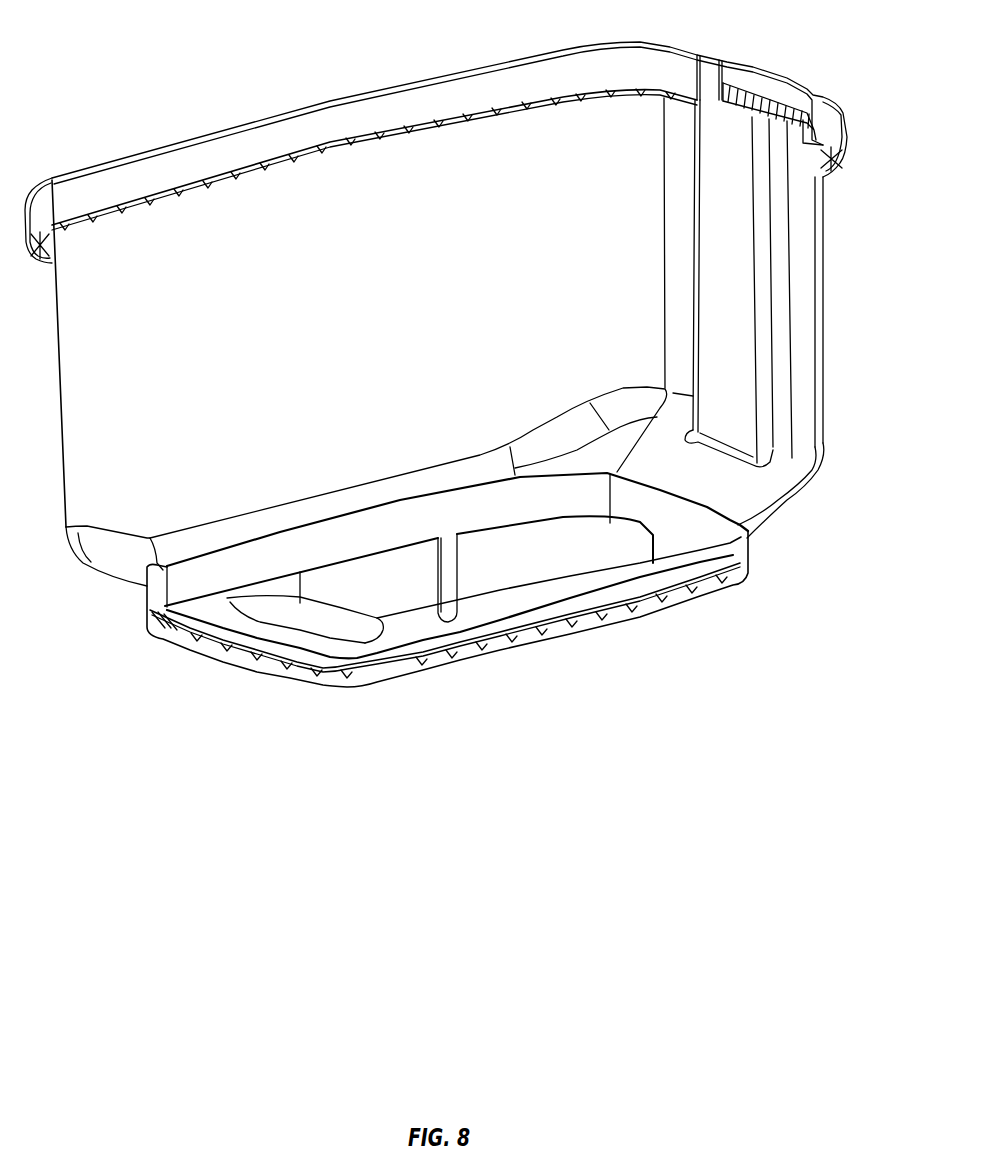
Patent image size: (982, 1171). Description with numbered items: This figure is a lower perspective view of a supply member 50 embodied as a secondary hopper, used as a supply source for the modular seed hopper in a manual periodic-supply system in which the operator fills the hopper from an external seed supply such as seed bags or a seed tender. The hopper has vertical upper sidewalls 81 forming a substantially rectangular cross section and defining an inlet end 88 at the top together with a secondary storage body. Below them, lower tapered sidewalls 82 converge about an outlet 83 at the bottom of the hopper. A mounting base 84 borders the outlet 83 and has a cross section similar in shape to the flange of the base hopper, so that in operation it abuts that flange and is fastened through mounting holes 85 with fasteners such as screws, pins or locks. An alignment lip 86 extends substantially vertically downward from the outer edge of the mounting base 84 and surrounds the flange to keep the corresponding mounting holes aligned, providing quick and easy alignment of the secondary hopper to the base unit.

The supply member 50 is at (276, 86).
The inlet end 88 is at (618, 47).
The vertical upper sidewalls 81 is at (388, 323).
The lower tapered sidewalls 82 is at (730, 487).
The outlet 83 is at (350, 627).
The mounting base 84 is at (393, 643).
The mounting holes 85 is at (490, 637).
The alignment lip 86 is at (193, 580).